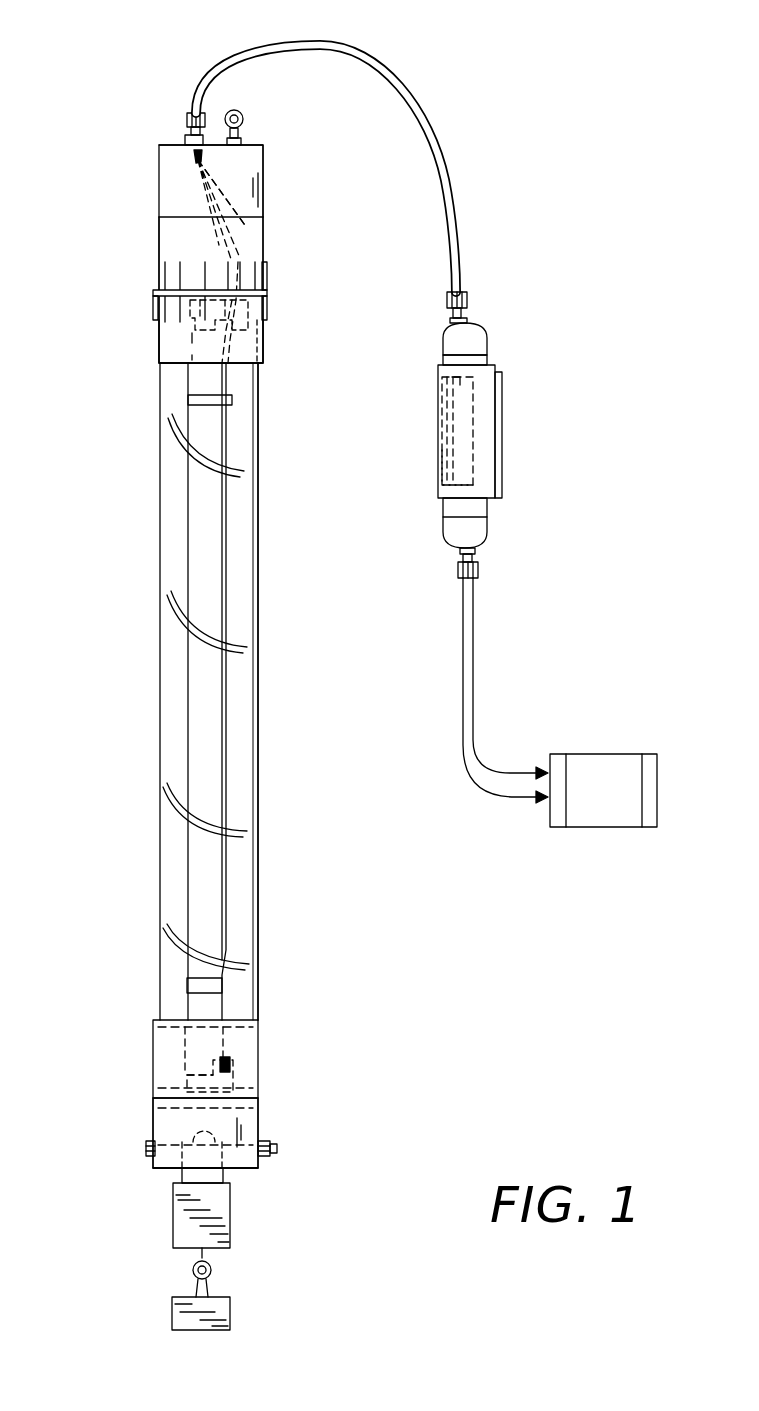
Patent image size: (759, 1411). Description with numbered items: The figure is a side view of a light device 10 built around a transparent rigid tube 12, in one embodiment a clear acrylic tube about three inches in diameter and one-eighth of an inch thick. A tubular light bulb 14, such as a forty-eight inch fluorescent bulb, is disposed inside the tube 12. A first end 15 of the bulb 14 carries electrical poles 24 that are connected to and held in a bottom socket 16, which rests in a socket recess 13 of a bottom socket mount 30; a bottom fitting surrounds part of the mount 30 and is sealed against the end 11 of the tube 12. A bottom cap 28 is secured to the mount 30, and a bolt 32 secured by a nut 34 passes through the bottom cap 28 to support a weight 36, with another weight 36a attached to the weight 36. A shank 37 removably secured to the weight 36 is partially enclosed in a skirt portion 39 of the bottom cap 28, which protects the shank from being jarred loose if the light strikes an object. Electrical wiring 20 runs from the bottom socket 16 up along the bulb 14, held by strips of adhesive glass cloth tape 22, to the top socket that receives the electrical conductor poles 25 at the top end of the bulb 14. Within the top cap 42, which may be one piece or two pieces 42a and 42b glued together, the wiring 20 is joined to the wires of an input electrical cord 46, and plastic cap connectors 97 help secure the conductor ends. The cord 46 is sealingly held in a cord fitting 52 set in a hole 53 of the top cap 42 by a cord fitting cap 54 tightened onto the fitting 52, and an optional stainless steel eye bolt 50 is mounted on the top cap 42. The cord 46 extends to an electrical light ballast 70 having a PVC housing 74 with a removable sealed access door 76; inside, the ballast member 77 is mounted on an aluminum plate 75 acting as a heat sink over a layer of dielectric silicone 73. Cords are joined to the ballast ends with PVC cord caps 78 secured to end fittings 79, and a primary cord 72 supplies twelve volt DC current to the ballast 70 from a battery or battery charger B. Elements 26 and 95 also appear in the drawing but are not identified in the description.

The light device 10 is at (152, 330).
The end of the tube 11 is at (237, 1020).
The transparent rigid tube 12 is at (160, 677).
The socket recess 13 is at (203, 343).
The tubular light bulb 14 is at (205, 780).
The first end of the bulb 15 is at (203, 1040).
The bottom socket 16 is at (228, 1068).
The electrical wiring 20 is at (228, 577).
The adhesive glass cloth tape 22 is at (188, 399).
The electrical poles 24 is at (205, 1075).
The electrical conductor poles 25 is at (193, 328).
The lower housing 26 is at (153, 1022).
The bottom cap 28 is at (160, 1118).
The bottom socket mount 30 is at (158, 1095).
The bolt 32 is at (146, 1152).
The nut 34 is at (260, 1133).
The weight 36 is at (226, 1235).
The another weight 36a is at (228, 1310).
The shank 37 is at (175, 1175).
The skirt portion 39 is at (240, 1165).
The top cap 42 is at (253, 197).
The top cap piece 42a is at (158, 202).
The top cap piece 42b is at (163, 228).
The input electrical cord 46 is at (237, 53).
The eye bolt 50 is at (246, 124).
The cord fitting 52 is at (184, 138).
The hole 53 is at (190, 150).
The cord fitting cap 54 is at (187, 115).
The electrical light ballast 70 is at (462, 440).
The primary cord 72 is at (470, 640).
The layer of dielectric silicone 73 is at (445, 472).
The housing of the ballast 74 is at (443, 338).
The aluminum plate 75 is at (452, 420).
The removable sealed access door 76 is at (502, 486).
The ballast member 77 is at (457, 388).
The PVC cord caps 78 is at (447, 300).
The end fittings 79 is at (470, 320).
The clamp band 95 is at (266, 270).
The plastic cap connectors 97 is at (246, 228).
The battery or battery charger B is at (615, 757).